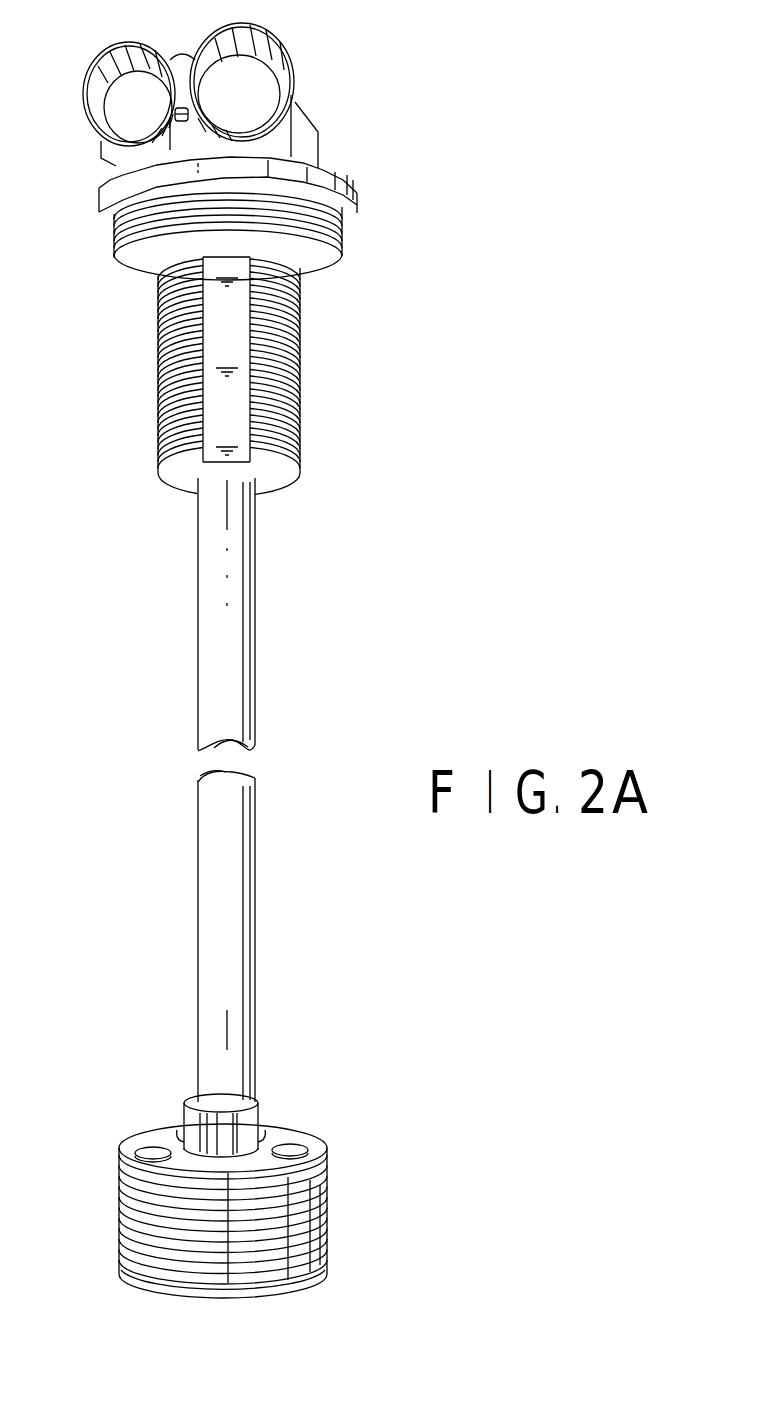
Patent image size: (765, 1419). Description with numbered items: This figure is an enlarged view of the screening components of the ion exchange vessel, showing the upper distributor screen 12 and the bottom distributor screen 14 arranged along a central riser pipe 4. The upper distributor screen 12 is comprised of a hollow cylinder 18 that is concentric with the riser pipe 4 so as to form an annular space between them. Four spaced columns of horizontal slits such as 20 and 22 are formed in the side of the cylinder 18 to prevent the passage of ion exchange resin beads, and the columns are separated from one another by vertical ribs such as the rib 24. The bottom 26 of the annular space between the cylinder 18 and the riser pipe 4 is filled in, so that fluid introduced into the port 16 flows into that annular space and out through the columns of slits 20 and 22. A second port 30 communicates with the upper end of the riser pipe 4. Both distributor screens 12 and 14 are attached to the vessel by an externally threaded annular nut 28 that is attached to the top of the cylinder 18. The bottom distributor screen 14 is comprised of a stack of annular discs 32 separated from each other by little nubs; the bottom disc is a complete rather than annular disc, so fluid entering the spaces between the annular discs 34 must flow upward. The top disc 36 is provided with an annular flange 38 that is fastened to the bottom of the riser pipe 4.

The riser pipe 4 is at (242, 672).
The upper distributor screen 12 is at (140, 345).
The bottom distributor screen 14 is at (356, 1203).
The port 16 is at (130, 98).
The hollow cylinder 18 is at (157, 307).
The horizontal slits 20 is at (163, 426).
The horizontal slits 22 is at (298, 433).
The vertical rib 24 is at (222, 432).
The bottom of the annular space 26 is at (282, 488).
The externally threaded annular nut 28 is at (353, 190).
The port 30 is at (253, 72).
The annular discs 32 is at (123, 1207).
The annular discs 34 is at (312, 1283).
The top disc 36 is at (294, 1130).
The annular flange 38 is at (258, 1100).